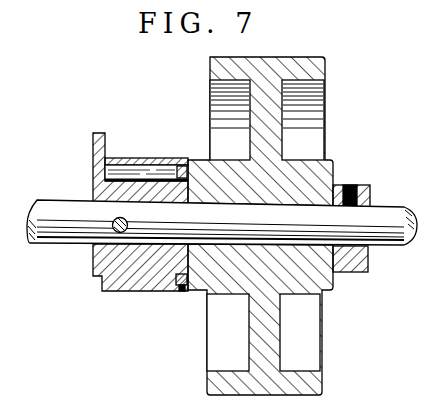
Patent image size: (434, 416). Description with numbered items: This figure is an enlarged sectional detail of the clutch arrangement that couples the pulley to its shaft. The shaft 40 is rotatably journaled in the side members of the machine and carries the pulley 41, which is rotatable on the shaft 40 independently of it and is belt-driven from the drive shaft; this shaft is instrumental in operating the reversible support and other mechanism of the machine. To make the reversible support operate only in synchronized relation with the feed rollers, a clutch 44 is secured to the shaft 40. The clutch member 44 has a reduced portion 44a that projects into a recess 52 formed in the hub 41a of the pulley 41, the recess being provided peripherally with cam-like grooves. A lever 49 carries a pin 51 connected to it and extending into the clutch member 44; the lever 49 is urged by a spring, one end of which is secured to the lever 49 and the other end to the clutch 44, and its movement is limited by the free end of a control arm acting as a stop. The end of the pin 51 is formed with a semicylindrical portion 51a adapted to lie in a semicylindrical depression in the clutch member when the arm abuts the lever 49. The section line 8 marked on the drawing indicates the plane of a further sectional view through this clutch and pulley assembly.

The section line 8- 8 is at (188, 107).
The shaft 40 is at (53, 244).
The pulley 41 is at (309, 113).
The hub 41a is at (234, 284).
The clutch 44 is at (142, 286).
The reduced portion 44a is at (177, 292).
The lever 49 is at (93, 141).
The pin 51 is at (128, 168).
The semicylindrical portion 51a is at (182, 167).
The recess 52 is at (182, 292).